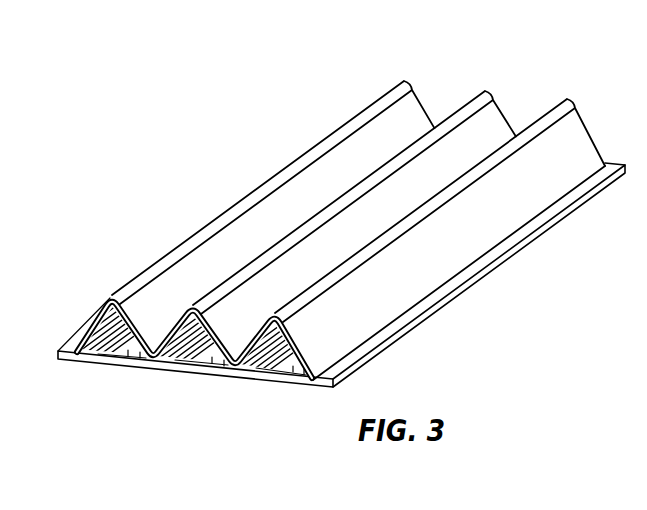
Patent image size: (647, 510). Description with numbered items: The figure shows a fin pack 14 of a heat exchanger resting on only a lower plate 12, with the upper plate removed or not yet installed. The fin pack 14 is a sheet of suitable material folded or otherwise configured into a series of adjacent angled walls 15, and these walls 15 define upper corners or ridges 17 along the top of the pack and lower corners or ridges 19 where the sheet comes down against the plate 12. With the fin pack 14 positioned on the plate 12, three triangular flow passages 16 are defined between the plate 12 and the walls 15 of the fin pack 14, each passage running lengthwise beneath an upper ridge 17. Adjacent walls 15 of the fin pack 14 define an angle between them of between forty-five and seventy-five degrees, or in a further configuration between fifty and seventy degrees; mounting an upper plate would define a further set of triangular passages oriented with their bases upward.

The plate 12 is at (100, 366).
The fin pack 14 is at (528, 90).
The angled wall 15 is at (176, 326).
The triangular flow passage 16 is at (124, 363).
The upper ridge 17 is at (404, 81).
The lower ridge 19 is at (233, 374).